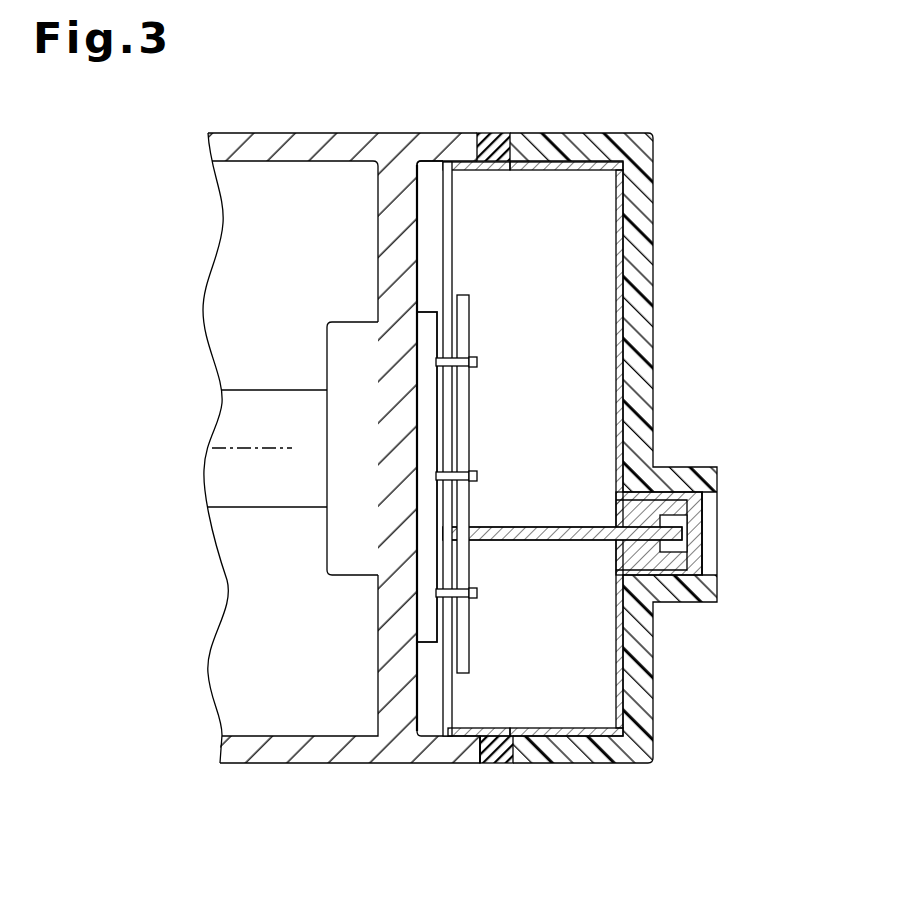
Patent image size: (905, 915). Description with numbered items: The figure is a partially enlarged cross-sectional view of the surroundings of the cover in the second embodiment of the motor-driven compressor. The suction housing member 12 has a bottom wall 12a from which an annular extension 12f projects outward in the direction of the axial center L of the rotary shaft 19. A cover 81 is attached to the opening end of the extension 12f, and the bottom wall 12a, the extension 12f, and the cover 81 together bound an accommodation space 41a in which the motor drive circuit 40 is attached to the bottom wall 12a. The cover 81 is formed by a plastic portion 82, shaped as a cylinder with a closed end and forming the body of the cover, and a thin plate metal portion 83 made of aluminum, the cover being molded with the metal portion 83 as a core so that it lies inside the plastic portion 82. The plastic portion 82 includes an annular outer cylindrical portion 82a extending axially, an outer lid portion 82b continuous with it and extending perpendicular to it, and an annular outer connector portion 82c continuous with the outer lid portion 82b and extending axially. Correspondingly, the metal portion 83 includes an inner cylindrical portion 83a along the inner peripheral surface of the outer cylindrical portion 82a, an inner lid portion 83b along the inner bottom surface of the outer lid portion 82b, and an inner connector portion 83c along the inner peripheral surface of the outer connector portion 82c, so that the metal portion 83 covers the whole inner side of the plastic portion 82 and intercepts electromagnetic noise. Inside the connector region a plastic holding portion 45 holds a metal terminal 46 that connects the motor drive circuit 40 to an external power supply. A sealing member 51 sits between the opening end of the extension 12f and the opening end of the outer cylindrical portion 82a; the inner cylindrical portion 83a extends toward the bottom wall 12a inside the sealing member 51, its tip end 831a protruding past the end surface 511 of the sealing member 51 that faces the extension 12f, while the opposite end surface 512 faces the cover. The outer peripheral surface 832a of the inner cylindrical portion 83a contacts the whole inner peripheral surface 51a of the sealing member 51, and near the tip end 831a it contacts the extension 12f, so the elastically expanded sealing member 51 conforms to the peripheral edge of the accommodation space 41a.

The suction housing member 12 is at (264, 140).
The bottom wall 12a is at (378, 263).
The extension 12f is at (445, 140).
The rotary shaft 19 is at (275, 390).
The axial center L is at (224, 450).
The motor drive circuit 40 is at (469, 330).
The accommodation space 41a is at (568, 431).
The holding portion 45 is at (682, 592).
The metal terminal 46 is at (508, 541).
The sealing member 51 is at (494, 735).
The inner peripheral surface 51a is at (500, 172).
The end surface 511 is at (478, 752).
The end surface 512 is at (521, 752).
The cover 81 is at (640, 133).
The plastic portion 82 is at (653, 233).
The outer cylindrical portion 82a is at (590, 140).
The outer lid portion 82b is at (653, 292).
The outer connector portion 82c is at (685, 467).
The metal portion 83 is at (615, 236).
The inner cylindrical portion 83a is at (538, 172).
The inner lid portion 83b is at (617, 291).
The inner connector portion 83c is at (650, 572).
The tip end 831a is at (434, 160).
The outer peripheral surface 832a is at (464, 161).